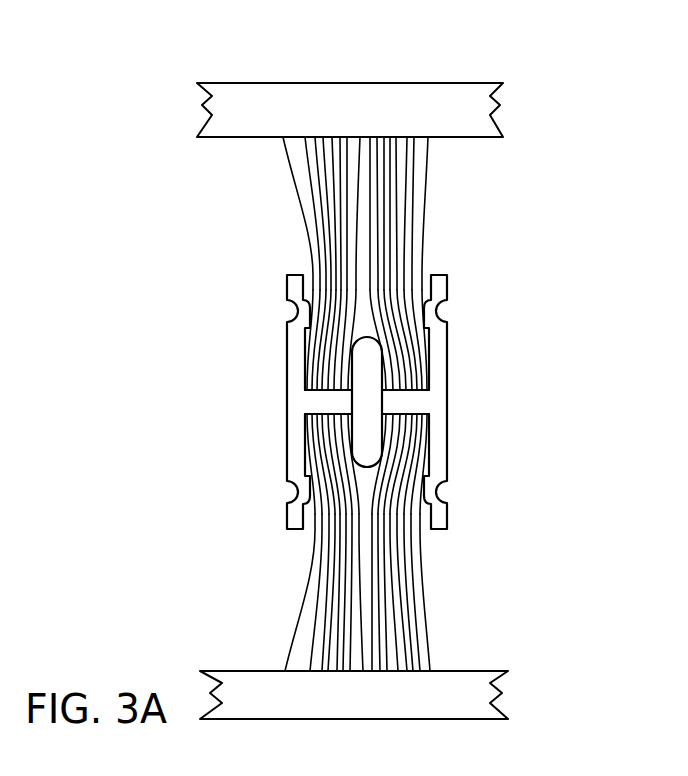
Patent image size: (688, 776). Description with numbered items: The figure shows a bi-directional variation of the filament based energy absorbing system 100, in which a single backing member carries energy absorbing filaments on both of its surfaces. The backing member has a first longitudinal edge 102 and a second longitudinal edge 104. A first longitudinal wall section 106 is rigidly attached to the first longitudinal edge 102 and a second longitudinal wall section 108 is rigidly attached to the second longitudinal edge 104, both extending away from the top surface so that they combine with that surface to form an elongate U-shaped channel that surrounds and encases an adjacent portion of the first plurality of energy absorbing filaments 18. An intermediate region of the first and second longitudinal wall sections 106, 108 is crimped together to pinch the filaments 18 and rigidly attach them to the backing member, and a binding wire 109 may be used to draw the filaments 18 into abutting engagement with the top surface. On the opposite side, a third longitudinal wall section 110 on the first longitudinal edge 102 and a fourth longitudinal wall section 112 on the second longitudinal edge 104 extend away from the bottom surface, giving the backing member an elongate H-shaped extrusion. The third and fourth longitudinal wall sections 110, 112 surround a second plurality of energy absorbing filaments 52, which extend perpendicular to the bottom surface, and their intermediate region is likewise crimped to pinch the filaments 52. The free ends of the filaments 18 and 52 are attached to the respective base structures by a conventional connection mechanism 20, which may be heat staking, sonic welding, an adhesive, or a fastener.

The filament based energy absorbing system 100 is at (547, 173).
The first plurality of energy absorbing filaments 18 is at (428, 185).
The binding wire 109 is at (365, 350).
The first longitudinal wall section 106 is at (292, 362).
The second longitudinal wall section 108 is at (447, 362).
The second longitudinal edge 104 is at (437, 392).
The first longitudinal edge 102 is at (288, 403).
The third longitudinal wall section 110 is at (288, 463).
The fourth longitudinal wall section 112 is at (447, 520).
The connection mechanism 20 is at (240, 670).
The second plurality of energy absorbing filaments 52 is at (430, 647).